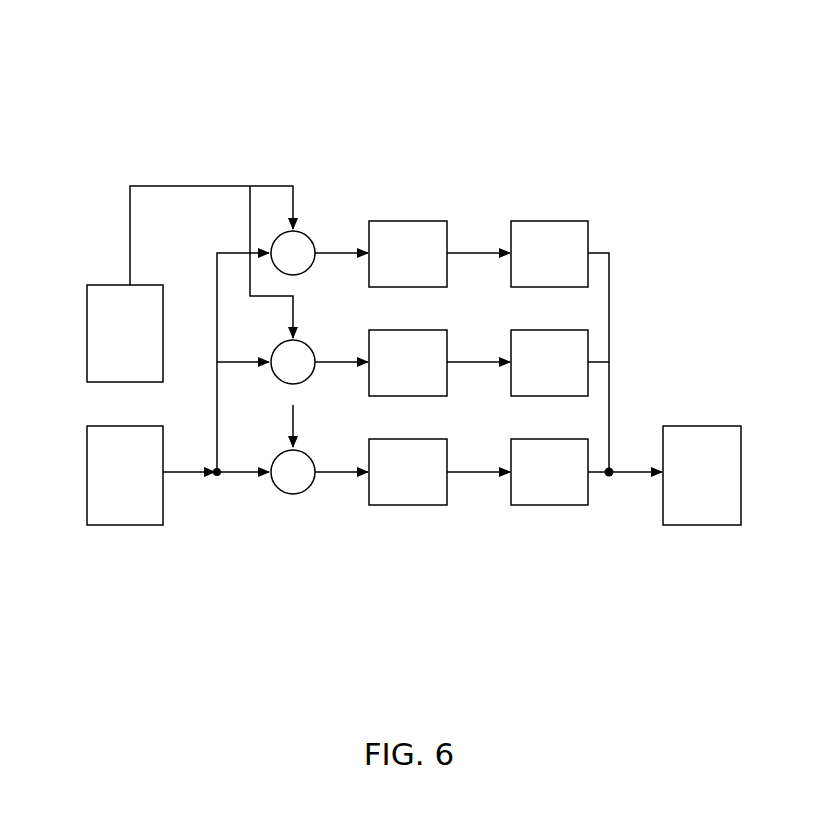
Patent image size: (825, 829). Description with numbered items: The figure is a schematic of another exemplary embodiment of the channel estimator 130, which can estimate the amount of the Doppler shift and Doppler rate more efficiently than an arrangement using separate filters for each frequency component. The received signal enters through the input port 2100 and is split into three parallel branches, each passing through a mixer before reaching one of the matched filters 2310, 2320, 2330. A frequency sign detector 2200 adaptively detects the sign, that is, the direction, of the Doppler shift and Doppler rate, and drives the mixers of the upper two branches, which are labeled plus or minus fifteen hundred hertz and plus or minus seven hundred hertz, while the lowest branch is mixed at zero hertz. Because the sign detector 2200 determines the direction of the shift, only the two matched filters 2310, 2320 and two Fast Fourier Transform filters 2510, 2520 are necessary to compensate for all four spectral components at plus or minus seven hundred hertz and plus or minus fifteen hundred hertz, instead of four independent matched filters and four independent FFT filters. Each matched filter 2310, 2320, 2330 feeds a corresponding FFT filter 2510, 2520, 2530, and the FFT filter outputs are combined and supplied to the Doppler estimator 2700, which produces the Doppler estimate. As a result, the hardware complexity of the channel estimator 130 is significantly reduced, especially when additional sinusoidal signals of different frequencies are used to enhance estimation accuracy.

The channel estimator 130 is at (460, 53).
The frequency sign detector 2200 is at (125, 333).
The input port 2100 is at (125, 475).
The matched filter 2310 is at (408, 254).
The matched filter 2320 is at (408, 363).
The matched filter 2330 is at (408, 472).
The Fast Fourier Transform (FFT) filter 2510 is at (549, 254).
The Fast Fourier Transform (FFT) filter 2520 is at (549, 363).
The Fast Fourier Transform (FFT) filter 2530 is at (549, 472).
The Doppler estimator 2700 is at (702, 475).